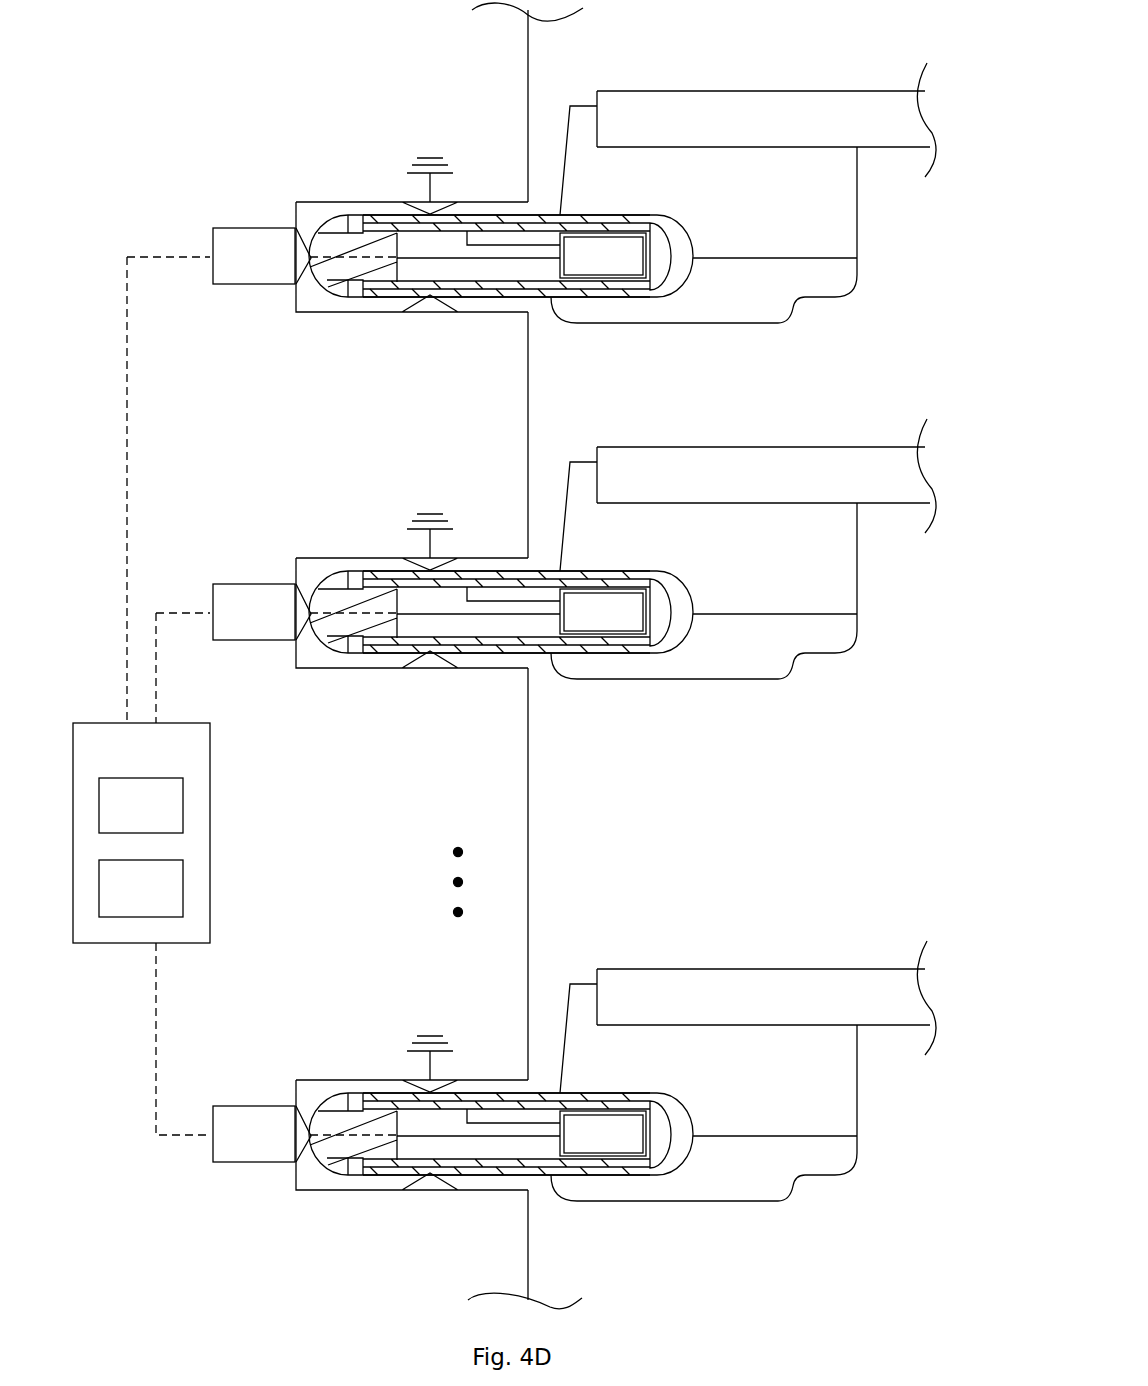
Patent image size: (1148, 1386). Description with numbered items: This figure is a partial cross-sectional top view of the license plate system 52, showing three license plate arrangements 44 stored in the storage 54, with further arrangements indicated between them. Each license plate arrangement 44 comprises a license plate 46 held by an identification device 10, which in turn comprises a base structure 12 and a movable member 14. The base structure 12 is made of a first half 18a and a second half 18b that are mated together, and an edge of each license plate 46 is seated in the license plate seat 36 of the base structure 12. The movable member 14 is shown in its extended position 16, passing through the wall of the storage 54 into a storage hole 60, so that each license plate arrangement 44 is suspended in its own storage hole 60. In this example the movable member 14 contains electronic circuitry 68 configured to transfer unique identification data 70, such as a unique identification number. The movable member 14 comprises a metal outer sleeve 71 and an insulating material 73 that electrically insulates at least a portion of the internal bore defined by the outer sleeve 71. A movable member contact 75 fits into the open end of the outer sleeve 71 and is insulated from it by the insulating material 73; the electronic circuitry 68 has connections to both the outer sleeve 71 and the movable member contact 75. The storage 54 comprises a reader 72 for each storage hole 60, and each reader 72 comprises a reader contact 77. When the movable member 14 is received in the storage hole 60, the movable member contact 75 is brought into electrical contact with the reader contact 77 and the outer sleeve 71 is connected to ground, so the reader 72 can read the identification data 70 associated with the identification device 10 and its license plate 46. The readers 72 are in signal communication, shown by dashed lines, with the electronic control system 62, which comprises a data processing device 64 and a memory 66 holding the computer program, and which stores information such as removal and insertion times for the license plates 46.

The identification device 10 is at (813, 60).
The base structure 12 is at (827, 227).
The movable member 14 is at (668, 257).
The extended position 16 is at (473, 190).
The first half 18a is at (710, 298).
The second half 18b is at (710, 216).
The license plate seat 36 is at (598, 122).
The license plate arrangement 44 is at (883, 50).
The license plate 46 is at (753, 118).
The license plate system 52 is at (168, 78).
The storage 54 is at (468, 76).
The storage hole 60 is at (472, 313).
The electronic control system 62 is at (125, 766).
The data processing device 64 is at (141, 805).
The memory 66 is at (126, 902).
The electronic circuitry 68 is at (588, 270).
The unique identification data 70 is at (368, 262).
The metal outer sleeve 71 is at (547, 292).
The reader 72 is at (237, 270).
The insulating material 73 is at (510, 285).
The movable member contact 75 is at (330, 273).
The reader contact 77 is at (305, 262).